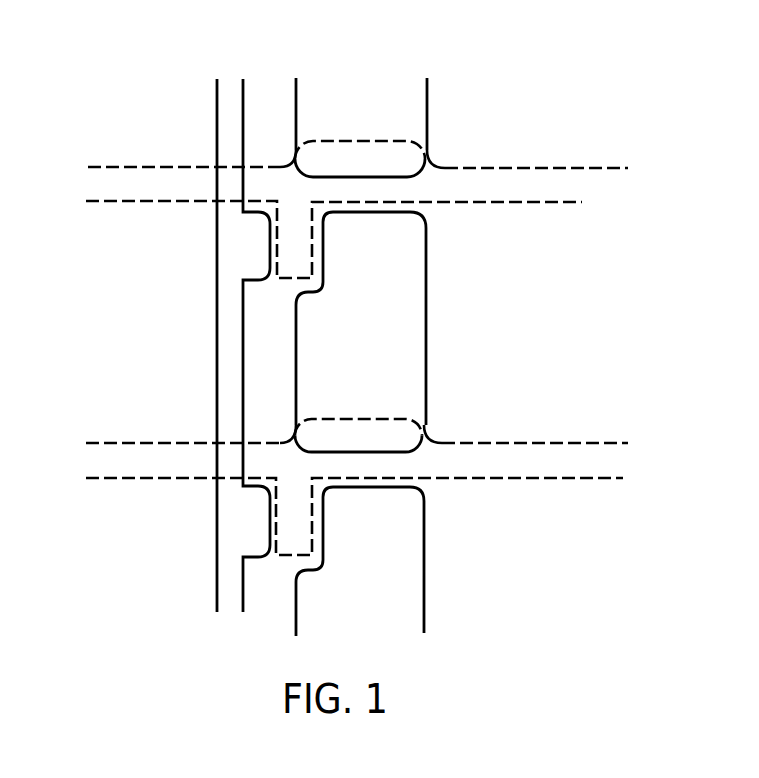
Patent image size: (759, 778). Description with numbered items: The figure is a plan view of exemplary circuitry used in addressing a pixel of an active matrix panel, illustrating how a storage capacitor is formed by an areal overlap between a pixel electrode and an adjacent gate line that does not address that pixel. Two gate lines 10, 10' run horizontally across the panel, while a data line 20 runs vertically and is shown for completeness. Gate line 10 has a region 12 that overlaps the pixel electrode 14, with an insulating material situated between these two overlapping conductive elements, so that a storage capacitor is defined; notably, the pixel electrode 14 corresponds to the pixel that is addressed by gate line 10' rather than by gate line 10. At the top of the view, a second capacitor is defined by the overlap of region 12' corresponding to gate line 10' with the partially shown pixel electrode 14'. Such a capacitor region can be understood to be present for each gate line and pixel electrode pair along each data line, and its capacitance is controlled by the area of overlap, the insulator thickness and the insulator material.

The gate line 10 is at (332, 490).
The gate line 10' is at (332, 214).
The region 12 is at (358, 411).
The region 12' is at (360, 137).
The pixel electrode 14 is at (384, 318).
The pixel electrode 14' is at (386, 114).
The data line 20 is at (229, 82).